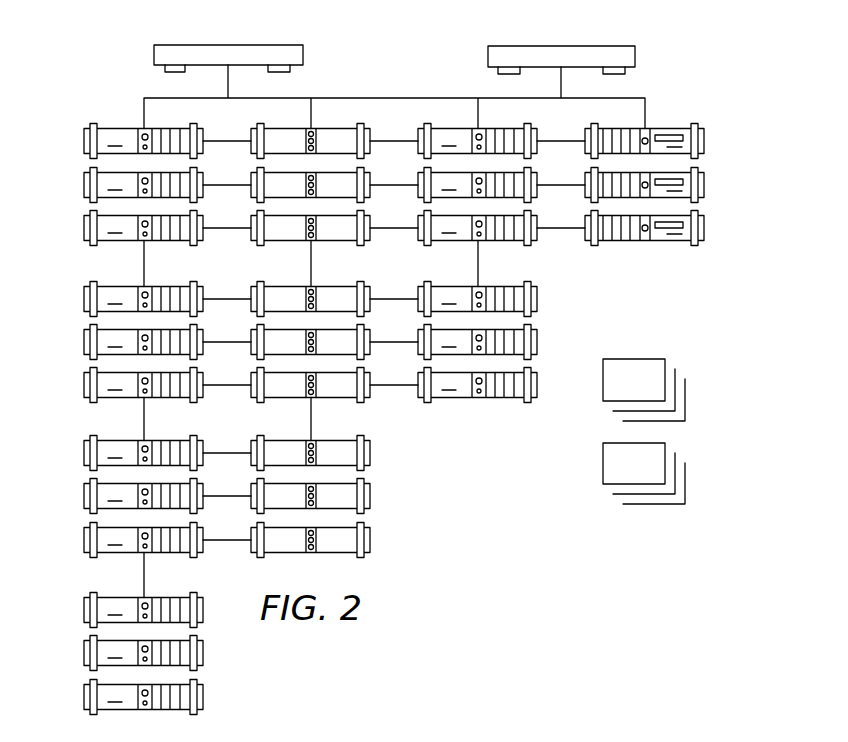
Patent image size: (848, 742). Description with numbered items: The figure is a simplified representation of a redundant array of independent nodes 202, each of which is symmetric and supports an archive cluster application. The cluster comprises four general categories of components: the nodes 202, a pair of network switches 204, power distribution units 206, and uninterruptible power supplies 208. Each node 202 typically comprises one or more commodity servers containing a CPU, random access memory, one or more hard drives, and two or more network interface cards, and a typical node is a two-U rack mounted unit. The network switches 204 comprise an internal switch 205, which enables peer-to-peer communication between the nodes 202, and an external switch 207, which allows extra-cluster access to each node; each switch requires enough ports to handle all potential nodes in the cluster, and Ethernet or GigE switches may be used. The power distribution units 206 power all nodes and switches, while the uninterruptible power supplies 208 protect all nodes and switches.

The nodes 202 is at (56, 120).
The network switches 204 is at (689, 93).
The internal switch 205 is at (154, 53).
The power distribution units 206 is at (633, 357).
The external switch 207 is at (637, 57).
The uninterruptible power supplies 208 is at (654, 508).